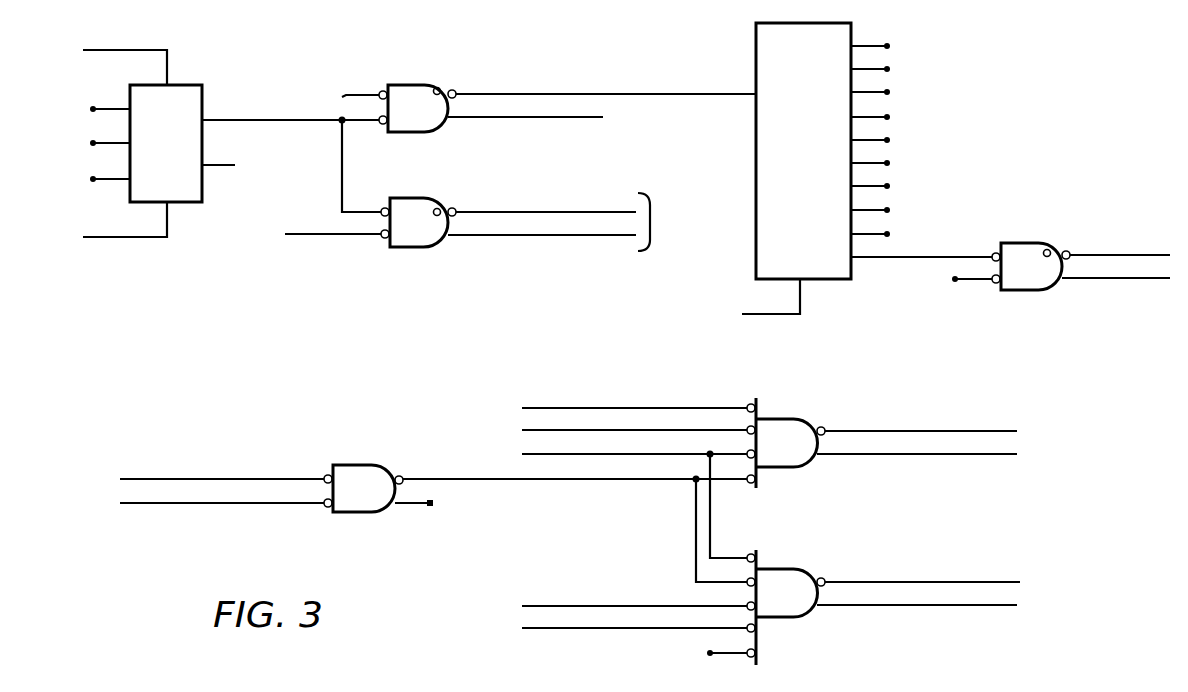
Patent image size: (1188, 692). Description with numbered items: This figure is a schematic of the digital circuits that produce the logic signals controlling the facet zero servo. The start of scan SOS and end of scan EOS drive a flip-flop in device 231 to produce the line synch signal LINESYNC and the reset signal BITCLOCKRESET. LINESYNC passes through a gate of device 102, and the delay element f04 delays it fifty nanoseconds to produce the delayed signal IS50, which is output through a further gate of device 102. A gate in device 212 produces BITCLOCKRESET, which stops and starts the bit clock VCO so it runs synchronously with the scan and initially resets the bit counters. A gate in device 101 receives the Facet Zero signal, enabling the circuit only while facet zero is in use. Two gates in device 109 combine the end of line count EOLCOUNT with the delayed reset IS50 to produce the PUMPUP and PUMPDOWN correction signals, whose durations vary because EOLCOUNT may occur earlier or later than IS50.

The MC231 D flip-flop g03a 231 is at (214, 132).
The MC102 NAND gates f05d and f03d 102 is at (756, 192).
The MC212 NAND gate g06a 212 is at (490, 194).
The f04 DLAY50 delay line f04 is at (859, 168).
The MC101 NAND gate h02a 101 is at (433, 497).
The MC109 NAND gates h01a and h01b 109 is at (771, 525).